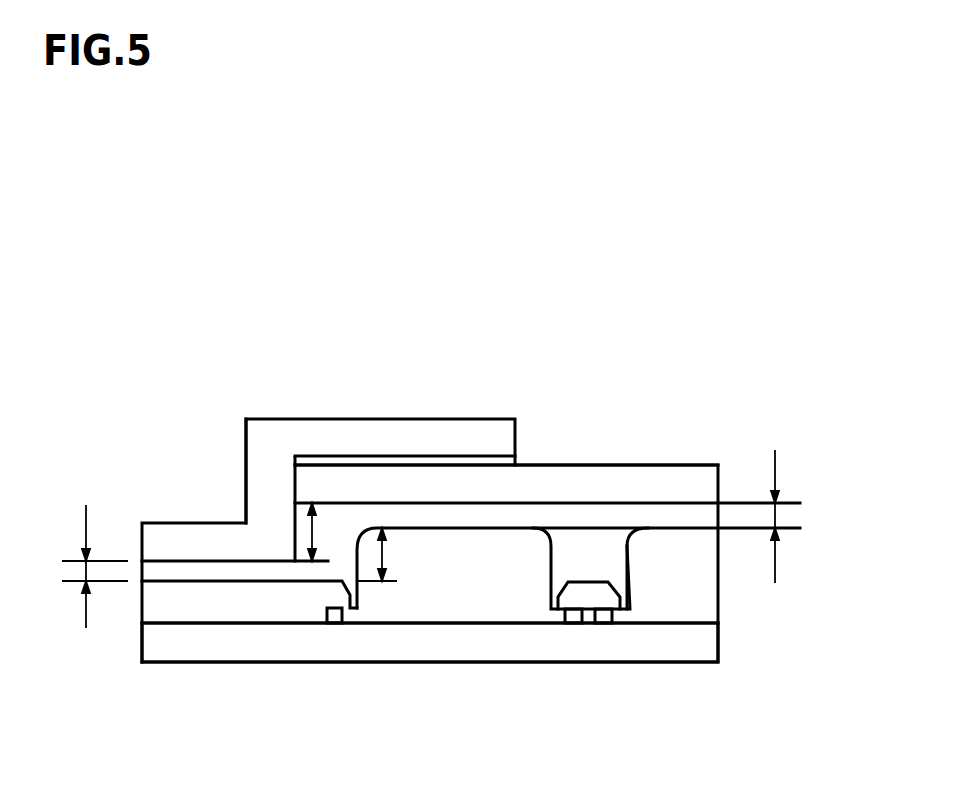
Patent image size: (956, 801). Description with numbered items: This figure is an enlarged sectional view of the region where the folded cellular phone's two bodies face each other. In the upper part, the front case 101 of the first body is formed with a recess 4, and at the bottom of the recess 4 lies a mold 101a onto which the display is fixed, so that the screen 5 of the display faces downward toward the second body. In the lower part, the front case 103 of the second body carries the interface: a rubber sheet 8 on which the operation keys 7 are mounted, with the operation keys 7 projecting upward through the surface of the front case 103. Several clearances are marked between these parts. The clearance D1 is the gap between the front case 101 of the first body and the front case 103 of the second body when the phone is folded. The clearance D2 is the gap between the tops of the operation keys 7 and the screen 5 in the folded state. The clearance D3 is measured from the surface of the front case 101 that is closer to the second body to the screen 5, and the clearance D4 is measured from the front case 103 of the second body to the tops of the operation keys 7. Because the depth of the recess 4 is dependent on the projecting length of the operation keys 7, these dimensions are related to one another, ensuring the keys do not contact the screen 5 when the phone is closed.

The recess 4 is at (302, 488).
The screen 5 is at (602, 483).
The operation keys 7 is at (458, 602).
The rubber sheet 8 is at (640, 642).
The front case 101 is at (240, 488).
The mold 101a is at (397, 443).
The front case 103 is at (252, 600).
The clearance between front cases D1 is at (80, 575).
The clearance between operation keys and screen D2 is at (778, 520).
The clearance between front case surface and screen D3 is at (331, 532).
The clearance between front case and key tops D4 is at (393, 554).